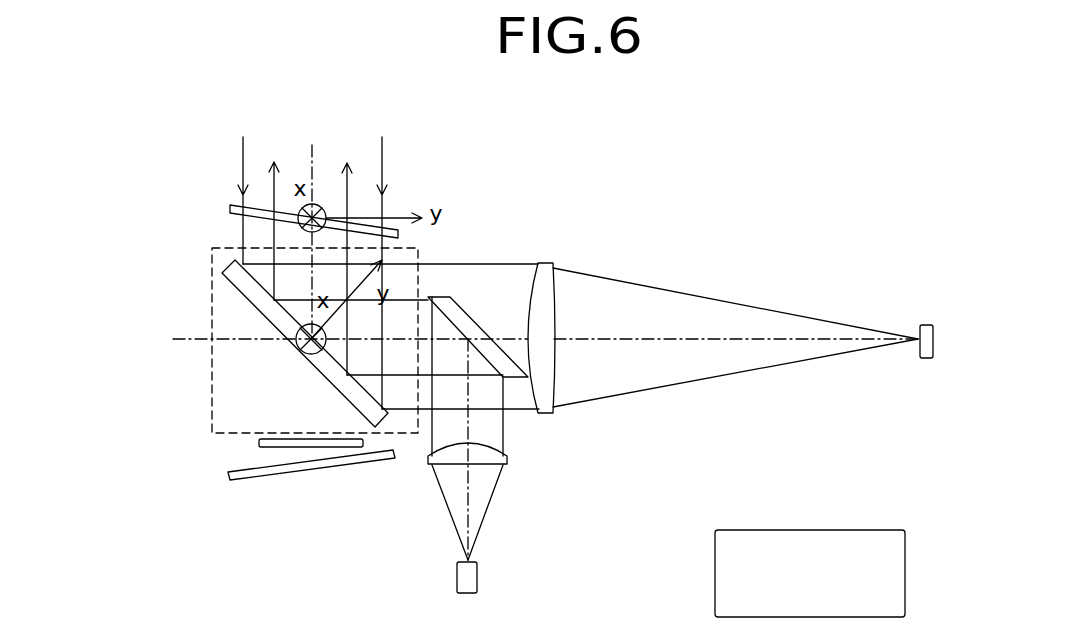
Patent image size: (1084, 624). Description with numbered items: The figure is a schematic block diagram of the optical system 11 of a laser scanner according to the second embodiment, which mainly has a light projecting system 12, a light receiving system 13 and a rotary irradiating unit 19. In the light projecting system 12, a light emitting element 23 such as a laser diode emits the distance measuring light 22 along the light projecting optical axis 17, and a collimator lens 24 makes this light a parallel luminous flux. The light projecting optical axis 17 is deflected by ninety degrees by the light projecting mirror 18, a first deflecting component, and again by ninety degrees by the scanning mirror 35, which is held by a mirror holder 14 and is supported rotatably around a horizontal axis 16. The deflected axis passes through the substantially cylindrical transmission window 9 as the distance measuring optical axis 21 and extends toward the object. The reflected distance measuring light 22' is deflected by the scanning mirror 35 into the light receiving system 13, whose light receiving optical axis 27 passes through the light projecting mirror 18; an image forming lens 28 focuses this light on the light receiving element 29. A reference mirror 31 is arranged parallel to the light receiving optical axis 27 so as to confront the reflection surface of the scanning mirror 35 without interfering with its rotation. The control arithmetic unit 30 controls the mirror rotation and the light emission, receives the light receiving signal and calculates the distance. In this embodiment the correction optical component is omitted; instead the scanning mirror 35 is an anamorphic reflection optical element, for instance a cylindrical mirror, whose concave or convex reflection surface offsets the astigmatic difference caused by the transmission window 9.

The optical system 11 is at (748, 128).
The transmission window 9 is at (232, 225).
The reflected distance measuring light 22' is at (533, 221).
The distance measuring light 22 is at (363, 317).
The distance measuring optical axis 21 is at (313, 157).
The rotary irradiating unit 19 is at (202, 281).
The scanning mirror 35 is at (247, 302).
The horizontal axis 16 is at (203, 339).
The mirror holder 14 is at (210, 405).
The reference mirror 31 is at (257, 443).
The light projecting mirror 18 is at (467, 308).
The image forming lens 28 is at (552, 262).
The light receiving system 13 is at (643, 260).
The light receiving element 29 is at (925, 325).
The light receiving optical axis 27 is at (677, 340).
The control arithmetic unit 30 is at (822, 532).
The collimator lens 24 is at (508, 463).
The light projecting optical axis 17 is at (482, 423).
The light emitting element 23 is at (478, 575).
The light projecting system 12 is at (513, 517).